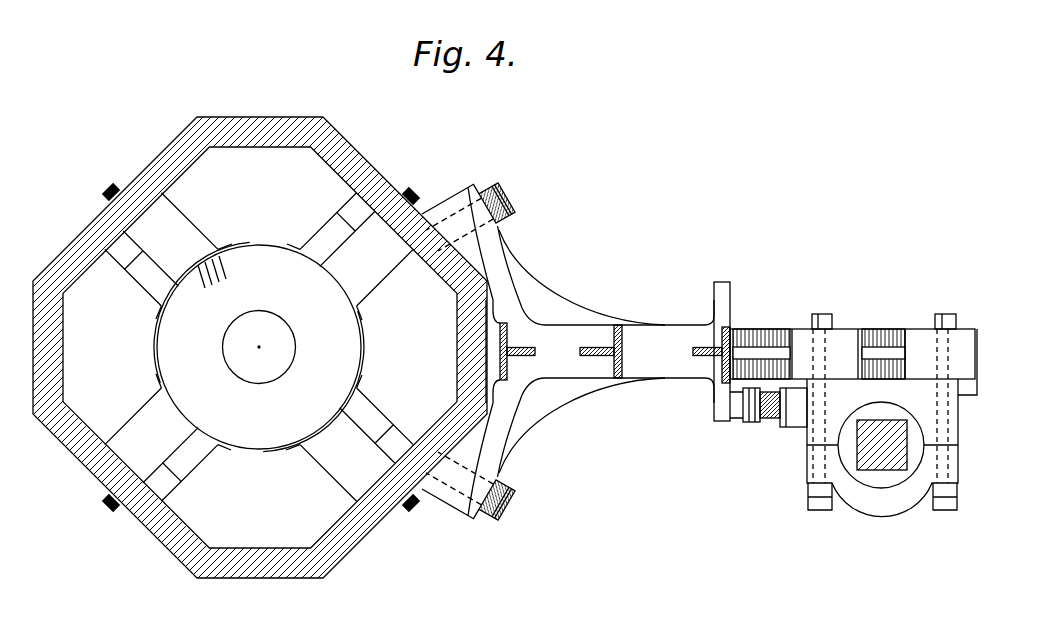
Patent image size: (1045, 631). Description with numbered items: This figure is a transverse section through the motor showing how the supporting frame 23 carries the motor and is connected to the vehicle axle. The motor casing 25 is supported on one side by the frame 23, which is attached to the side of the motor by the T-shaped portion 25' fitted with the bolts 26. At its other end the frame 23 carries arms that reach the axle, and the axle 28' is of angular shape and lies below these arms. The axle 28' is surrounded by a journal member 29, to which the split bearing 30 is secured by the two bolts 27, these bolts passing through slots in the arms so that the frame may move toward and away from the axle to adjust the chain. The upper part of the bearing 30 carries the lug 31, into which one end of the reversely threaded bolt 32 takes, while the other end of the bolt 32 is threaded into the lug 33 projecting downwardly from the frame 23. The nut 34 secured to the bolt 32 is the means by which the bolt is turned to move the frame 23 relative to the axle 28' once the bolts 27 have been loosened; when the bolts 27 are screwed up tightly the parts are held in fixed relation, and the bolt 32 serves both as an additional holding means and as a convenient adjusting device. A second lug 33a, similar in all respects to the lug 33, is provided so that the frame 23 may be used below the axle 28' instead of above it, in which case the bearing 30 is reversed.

The motor casing 25 is at (260, 332).
The T-shaped portion 25' is at (568, 351).
The bolts 26 is at (507, 192).
The supporting frame 23 is at (635, 352).
The lug 33a is at (721, 295).
The lug 33 is at (722, 404).
The nut 34 is at (722, 396).
The bolts 27 is at (828, 314).
The split bearing 30 is at (933, 412).
The axle 28' is at (895, 479).
The journal member 29 is at (880, 477).
The lug 31 is at (797, 408).
The reversely threaded bolt 32 is at (748, 418).